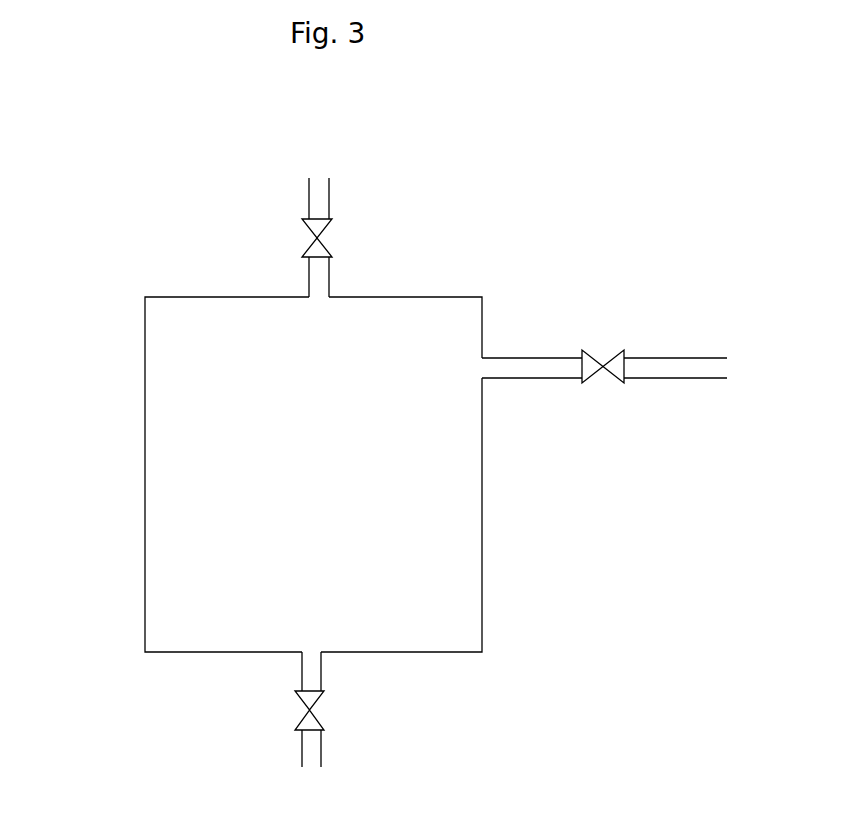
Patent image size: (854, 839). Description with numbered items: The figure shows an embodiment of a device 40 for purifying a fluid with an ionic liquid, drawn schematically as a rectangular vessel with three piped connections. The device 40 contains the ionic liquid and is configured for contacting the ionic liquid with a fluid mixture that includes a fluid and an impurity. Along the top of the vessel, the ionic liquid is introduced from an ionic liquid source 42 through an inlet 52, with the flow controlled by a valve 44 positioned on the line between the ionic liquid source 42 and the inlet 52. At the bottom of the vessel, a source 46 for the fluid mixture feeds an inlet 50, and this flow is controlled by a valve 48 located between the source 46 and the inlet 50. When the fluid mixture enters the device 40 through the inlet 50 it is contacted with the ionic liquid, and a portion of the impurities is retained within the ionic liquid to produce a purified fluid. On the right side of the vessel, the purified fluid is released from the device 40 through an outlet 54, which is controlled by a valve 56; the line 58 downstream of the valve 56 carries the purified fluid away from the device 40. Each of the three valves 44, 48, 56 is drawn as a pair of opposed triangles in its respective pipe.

The device 40 is at (144, 557).
The ionic liquid source 42 is at (322, 183).
The valve 44 is at (323, 237).
The source for the fluid mixture 46 is at (310, 767).
The valve 48 is at (318, 710).
The inlet 50 is at (312, 656).
The inlet 52 is at (317, 293).
The outlet 54 is at (483, 366).
The valve 56 is at (603, 357).
The side line 58 is at (693, 371).